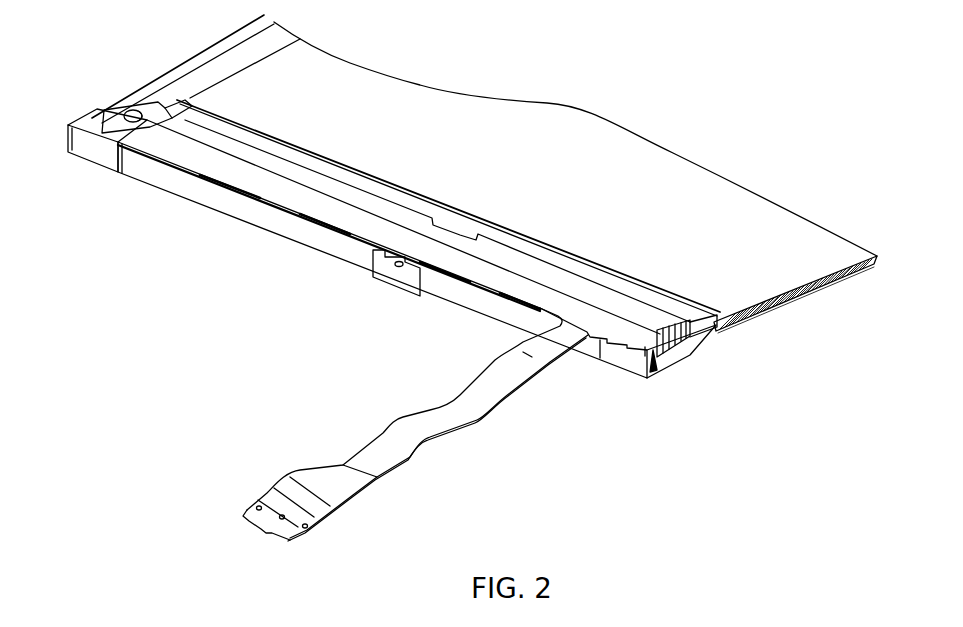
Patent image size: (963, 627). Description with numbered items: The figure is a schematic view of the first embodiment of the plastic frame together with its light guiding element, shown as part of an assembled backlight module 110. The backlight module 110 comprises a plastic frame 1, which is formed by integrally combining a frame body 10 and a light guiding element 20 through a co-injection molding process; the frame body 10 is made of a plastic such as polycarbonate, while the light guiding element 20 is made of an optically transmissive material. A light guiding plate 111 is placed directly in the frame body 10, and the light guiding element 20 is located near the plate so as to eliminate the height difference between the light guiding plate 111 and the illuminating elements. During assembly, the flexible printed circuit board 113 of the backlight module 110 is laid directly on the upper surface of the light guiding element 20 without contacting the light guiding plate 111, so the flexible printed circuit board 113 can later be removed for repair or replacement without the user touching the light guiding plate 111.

The plastic frame 1 is at (217, 218).
The frame body 10 is at (96, 110).
The backlight module 110 is at (66, 76).
The light guiding plate 111 is at (848, 272).
The flexible printed circuit board 113 is at (520, 343).
The light guiding element 20 is at (700, 346).